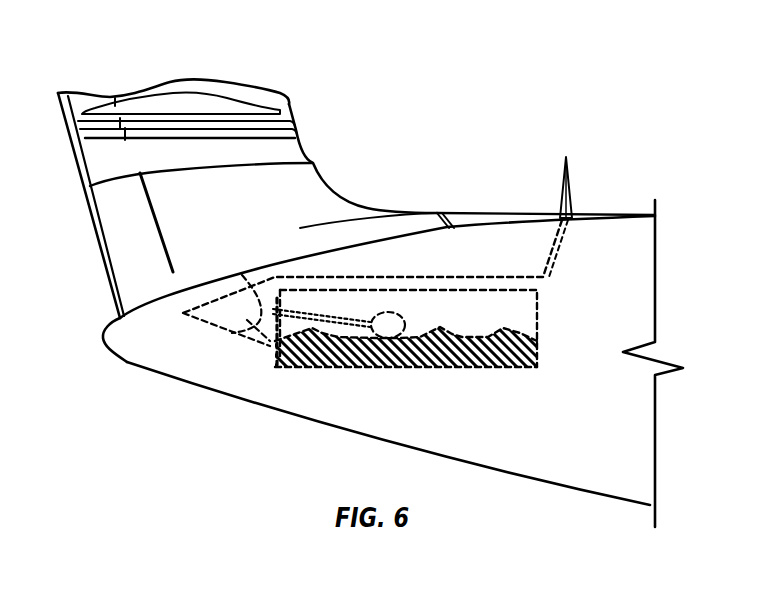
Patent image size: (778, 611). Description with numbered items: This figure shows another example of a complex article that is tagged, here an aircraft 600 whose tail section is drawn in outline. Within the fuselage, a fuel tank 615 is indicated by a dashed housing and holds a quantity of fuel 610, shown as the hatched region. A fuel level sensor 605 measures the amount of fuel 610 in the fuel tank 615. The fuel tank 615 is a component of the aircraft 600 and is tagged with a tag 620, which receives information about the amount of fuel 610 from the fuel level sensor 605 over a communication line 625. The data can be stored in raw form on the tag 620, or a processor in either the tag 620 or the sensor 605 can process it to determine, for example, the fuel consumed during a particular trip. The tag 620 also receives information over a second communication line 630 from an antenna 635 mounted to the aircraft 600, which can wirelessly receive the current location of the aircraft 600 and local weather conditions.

The aircraft 600 is at (474, 34).
The fuel level sensor 605 is at (242, 275).
The fuel 610 is at (400, 352).
The fuel tank 615 is at (543, 320).
The tag 620 is at (270, 348).
The communication line 625 is at (232, 333).
The communication line 630 is at (572, 252).
The antenna 635 is at (570, 193).